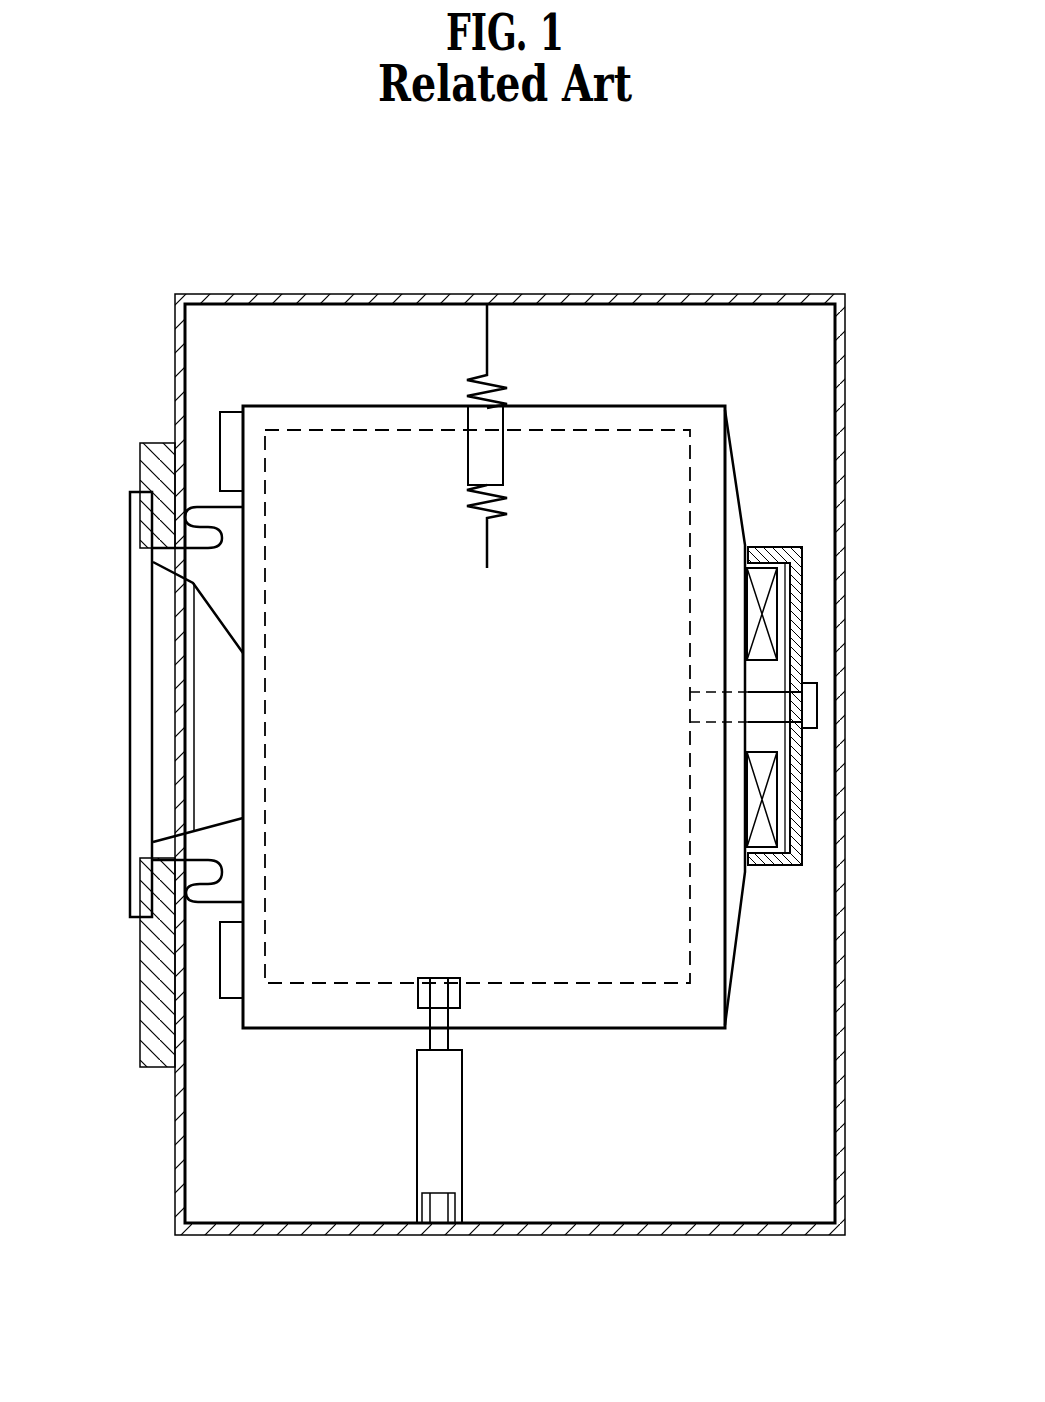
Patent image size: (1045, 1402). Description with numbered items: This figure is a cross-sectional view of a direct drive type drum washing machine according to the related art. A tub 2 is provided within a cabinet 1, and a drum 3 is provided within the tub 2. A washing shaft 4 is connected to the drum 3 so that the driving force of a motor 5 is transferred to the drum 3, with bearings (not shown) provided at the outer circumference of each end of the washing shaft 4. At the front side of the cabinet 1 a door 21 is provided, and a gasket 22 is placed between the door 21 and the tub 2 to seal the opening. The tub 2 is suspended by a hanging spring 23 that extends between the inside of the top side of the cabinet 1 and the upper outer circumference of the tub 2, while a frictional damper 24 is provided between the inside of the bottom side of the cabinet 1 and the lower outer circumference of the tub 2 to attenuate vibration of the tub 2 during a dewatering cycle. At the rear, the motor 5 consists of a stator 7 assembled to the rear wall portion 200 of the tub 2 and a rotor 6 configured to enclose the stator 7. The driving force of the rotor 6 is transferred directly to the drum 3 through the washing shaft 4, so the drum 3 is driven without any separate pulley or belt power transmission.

The cabinet 1 is at (277, 295).
The tub 2 is at (632, 405).
The drum 3 is at (385, 430).
The washing shaft 4 is at (767, 703).
The motor 5 is at (834, 706).
The rotor 6 is at (797, 573).
The stator 7 is at (768, 612).
The door 21 is at (136, 721).
The gasket 22 is at (210, 903).
The hanging spring 23 is at (497, 375).
The frictional damper 24 is at (445, 1132).
The rear wall portion 200 is at (737, 500).